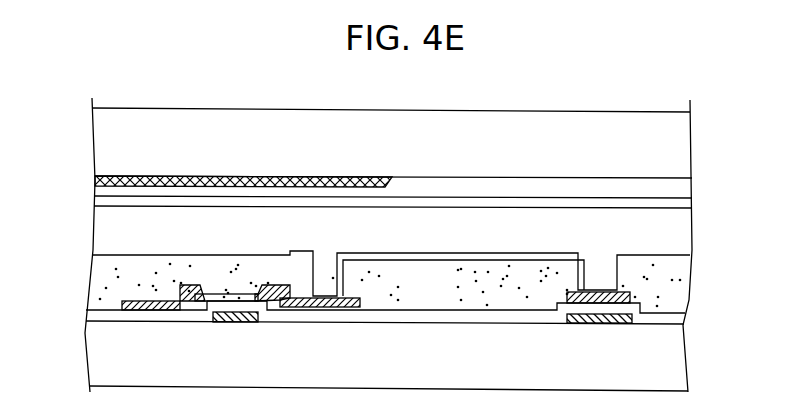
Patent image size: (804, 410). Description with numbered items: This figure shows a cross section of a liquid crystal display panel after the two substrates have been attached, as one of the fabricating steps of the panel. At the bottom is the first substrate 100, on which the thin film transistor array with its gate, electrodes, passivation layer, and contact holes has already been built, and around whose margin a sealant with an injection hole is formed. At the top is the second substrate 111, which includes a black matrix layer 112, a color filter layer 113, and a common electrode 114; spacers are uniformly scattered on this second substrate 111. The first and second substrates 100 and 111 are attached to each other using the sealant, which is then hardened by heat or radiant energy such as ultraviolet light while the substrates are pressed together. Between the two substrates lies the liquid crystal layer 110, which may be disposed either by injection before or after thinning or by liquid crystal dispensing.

The first substrate 100 is at (683, 352).
The liquid crystal layer 110 is at (692, 235).
The second substrate 111 is at (692, 162).
The black matrix layer 112 is at (97, 180).
The color filter layer 113 is at (692, 190).
The common electrode 114 is at (96, 200).